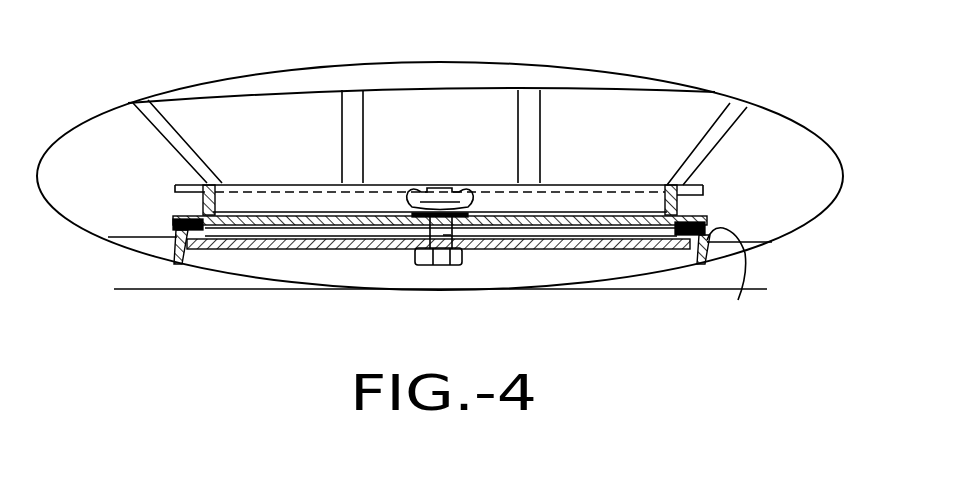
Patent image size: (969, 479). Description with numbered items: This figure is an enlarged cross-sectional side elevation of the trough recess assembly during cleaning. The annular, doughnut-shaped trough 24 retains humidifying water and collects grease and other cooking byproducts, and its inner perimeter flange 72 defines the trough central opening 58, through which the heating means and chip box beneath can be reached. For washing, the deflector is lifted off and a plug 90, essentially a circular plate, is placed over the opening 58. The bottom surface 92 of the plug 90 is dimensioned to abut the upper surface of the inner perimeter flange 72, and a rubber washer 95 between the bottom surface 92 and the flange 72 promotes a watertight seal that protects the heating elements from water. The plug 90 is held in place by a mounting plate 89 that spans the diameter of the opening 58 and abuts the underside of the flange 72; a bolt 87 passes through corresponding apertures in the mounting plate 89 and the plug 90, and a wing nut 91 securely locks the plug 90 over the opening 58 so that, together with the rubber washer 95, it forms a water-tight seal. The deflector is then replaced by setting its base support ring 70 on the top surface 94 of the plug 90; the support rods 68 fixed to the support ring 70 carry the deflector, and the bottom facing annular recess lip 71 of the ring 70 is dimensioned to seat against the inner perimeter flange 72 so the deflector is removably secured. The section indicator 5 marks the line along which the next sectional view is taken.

The support rods 68 is at (717, 128).
The base support ring 70 is at (298, 176).
The inner perimeter flange 72 is at (185, 215).
The annular recess lip 71 is at (695, 203).
The plug 90 is at (714, 210).
The mounting plate 89 is at (592, 249).
The wing nut 91 is at (467, 190).
The top surface 94 is at (572, 215).
The trough central opening 58 is at (403, 276).
The bolt 87 is at (470, 252).
The bottom surface 92 is at (177, 232).
The rubber washer 95 is at (718, 249).
The trough 24 is at (738, 291).
The section line 5 is at (767, 226).